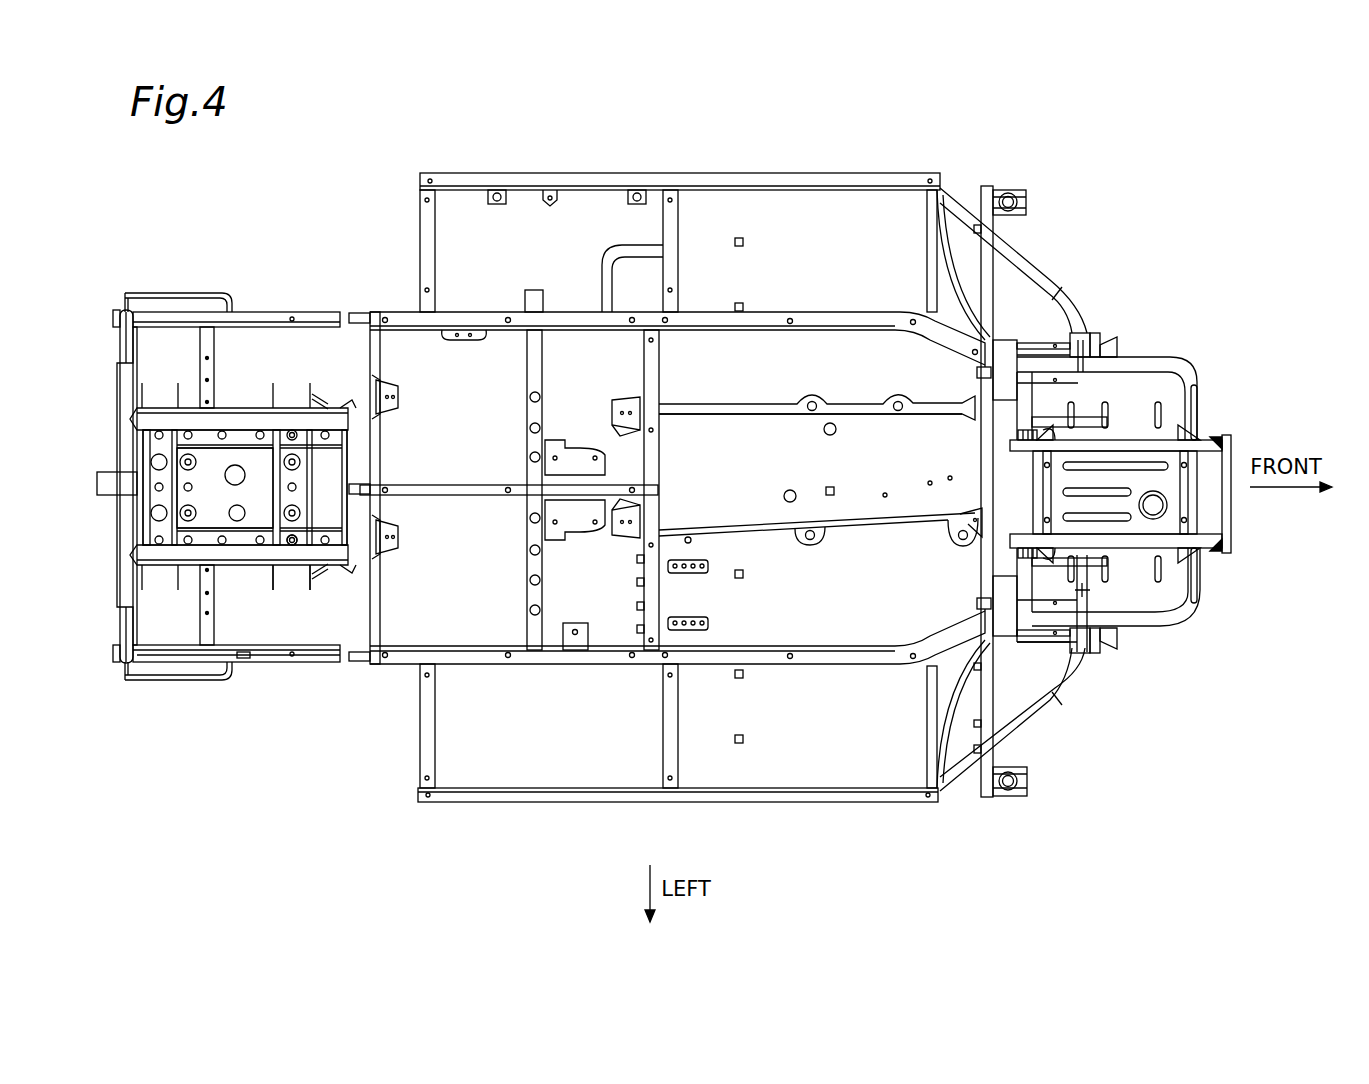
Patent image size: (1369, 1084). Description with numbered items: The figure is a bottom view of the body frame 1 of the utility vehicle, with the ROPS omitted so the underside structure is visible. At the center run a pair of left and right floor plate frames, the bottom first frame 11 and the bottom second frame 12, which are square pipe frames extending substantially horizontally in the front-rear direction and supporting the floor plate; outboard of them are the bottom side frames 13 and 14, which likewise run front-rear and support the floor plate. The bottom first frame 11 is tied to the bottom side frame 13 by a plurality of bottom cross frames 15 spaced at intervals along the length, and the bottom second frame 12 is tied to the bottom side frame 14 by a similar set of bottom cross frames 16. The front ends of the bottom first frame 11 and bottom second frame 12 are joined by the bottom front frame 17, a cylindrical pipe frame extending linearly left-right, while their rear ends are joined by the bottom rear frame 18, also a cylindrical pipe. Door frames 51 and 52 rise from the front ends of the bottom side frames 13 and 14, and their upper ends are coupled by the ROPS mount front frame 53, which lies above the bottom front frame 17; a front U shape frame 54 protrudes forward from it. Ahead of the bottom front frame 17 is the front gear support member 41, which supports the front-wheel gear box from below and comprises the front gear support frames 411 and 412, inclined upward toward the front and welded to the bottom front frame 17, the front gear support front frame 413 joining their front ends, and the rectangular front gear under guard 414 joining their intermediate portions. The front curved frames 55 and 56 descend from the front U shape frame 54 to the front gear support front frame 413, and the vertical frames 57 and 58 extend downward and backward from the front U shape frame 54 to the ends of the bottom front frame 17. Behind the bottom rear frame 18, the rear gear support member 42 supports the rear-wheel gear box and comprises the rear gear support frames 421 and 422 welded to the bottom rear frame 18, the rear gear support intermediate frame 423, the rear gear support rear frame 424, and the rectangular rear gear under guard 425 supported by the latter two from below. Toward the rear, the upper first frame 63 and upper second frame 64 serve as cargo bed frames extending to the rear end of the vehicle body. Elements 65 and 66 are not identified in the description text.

The body frame 1 is at (1125, 235).
The bottom first frame 11 is at (497, 320).
The bottom second frame 12 is at (497, 662).
The bottom side frame 13 is at (718, 180).
The bottom side frame 14 is at (575, 800).
The bottom cross frames 15 is at (428, 215).
The bottom cross frames 16 is at (428, 745).
The bottom front frame 17 is at (1000, 635).
The bottom rear frame 18 is at (362, 640).
The front gear support member 41 is at (1150, 395).
The front gear support frame 411 is at (1120, 445).
The front gear support frame 412 is at (1130, 540).
The front gear support front frame 413 is at (1228, 458).
The front gear under guard 414 is at (1103, 505).
The rear gear support member 42 is at (245, 388).
The rear gear support frame 421 is at (293, 410).
The rear gear support frame 422 is at (285, 562).
The rear gear support intermediate frame 423 is at (298, 545).
The rear gear support rear frame 424 is at (153, 548).
The rear gear under guard 425 is at (218, 495).
The door frame 51 is at (985, 200).
The door frame 52 is at (963, 778).
The ROPS mount front frame 53 is at (985, 732).
The front U shape frame 54 is at (1035, 270).
The front curved frame 55 is at (1185, 360).
The front curved frame 56 is at (1185, 628).
The vertical frame 57 is at (1050, 360).
The vertical frame 58 is at (1062, 640).
The upper first frame 63 is at (262, 660).
The upper second frame 64 is at (232, 318).
The rear bumper 65 is at (125, 385).
The rear guard pipe 66 is at (208, 338).